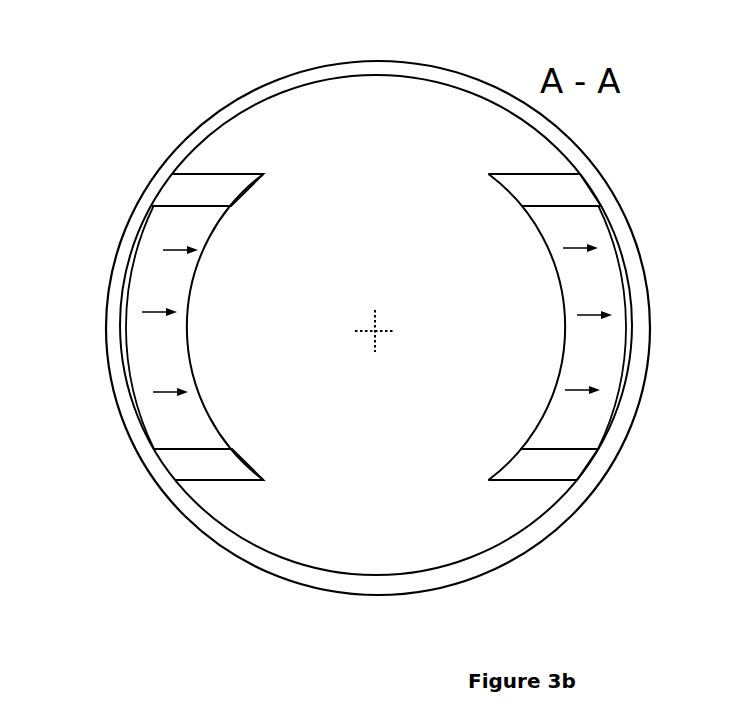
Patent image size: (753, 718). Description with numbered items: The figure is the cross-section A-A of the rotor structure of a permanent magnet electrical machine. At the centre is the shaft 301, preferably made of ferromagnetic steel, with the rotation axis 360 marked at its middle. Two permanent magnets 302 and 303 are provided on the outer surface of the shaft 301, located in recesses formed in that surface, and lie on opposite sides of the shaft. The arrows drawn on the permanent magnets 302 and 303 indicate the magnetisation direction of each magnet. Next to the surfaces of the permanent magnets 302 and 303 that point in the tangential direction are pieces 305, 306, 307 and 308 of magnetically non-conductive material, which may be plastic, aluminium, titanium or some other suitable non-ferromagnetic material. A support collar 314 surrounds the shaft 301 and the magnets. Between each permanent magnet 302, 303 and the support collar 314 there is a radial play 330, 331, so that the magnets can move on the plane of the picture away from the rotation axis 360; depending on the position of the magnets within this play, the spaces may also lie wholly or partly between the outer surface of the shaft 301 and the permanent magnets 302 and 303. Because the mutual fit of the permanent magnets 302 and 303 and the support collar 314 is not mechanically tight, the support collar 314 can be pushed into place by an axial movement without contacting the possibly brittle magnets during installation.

The support collar 314 is at (234, 101).
The radial play 330 is at (633, 298).
The radial play 331 is at (122, 322).
The shaft 301 is at (390, 199).
The permanent magnet 302 is at (608, 292).
The permanent magnet 303 is at (175, 356).
The piece of magnetically non-conductive material 305 is at (568, 200).
The piece of magnetically non-conductive material 306 is at (568, 477).
The piece of magnetically non-conductive material 307 is at (218, 200).
The piece of magnetically non-conductive material 308 is at (221, 477).
The rotation axis 360 is at (375, 326).